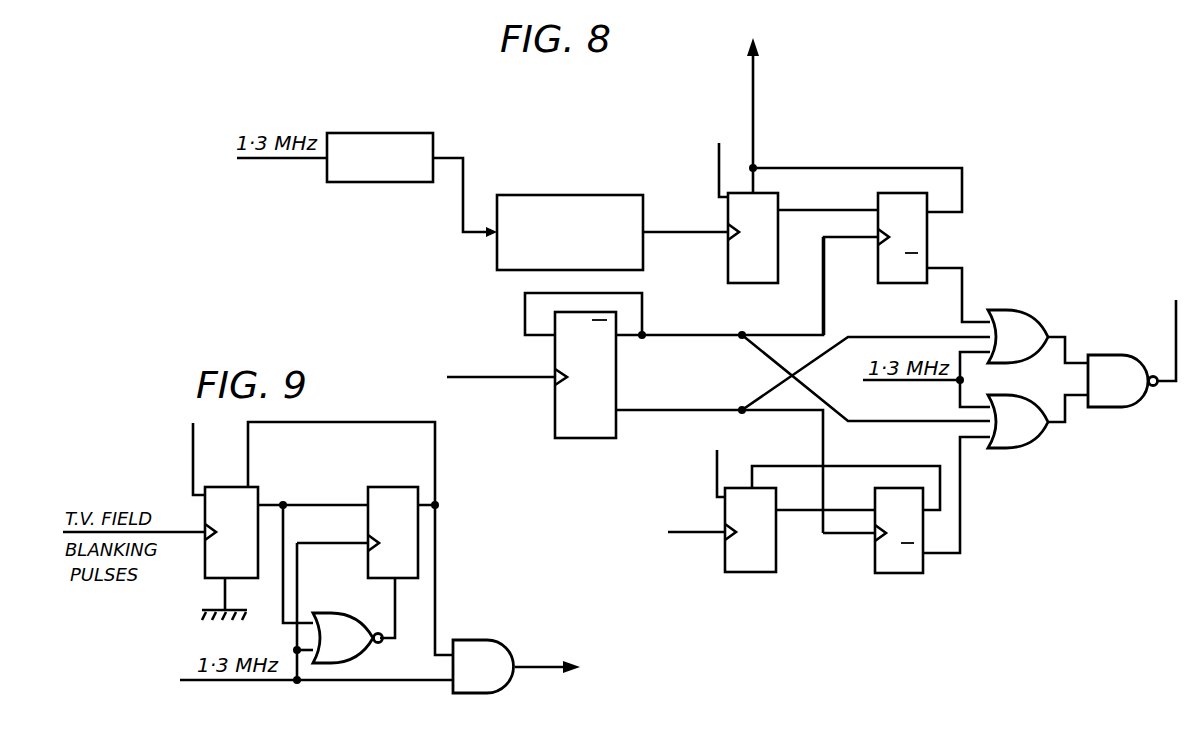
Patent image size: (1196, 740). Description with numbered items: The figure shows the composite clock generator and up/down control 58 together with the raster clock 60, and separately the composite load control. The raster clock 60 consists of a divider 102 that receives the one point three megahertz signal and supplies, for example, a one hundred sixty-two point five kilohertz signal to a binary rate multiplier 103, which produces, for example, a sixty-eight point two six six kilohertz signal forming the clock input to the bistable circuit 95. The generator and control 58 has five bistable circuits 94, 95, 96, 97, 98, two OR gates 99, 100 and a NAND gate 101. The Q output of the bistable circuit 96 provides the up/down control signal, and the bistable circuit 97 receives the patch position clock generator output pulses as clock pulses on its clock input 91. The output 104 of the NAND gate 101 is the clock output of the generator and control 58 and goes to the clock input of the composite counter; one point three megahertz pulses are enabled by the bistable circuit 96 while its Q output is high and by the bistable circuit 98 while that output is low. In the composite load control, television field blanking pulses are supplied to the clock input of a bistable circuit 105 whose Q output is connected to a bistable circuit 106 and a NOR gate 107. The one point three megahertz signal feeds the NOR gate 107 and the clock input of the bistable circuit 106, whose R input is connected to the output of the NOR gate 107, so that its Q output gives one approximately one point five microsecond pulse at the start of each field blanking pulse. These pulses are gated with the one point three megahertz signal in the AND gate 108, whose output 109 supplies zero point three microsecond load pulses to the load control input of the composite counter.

In FIG. 8, the composite clock generator and up/down control 58 is at (1045, 263).
In FIG. 8, the raster clock 60 is at (487, 173).
In FIG. 8, the clock input line 91 is at (692, 534).
In FIG. 8, the bistable circuit 94 is at (555, 421).
In FIG. 8, the bistable circuit 95 is at (728, 211).
In FIG. 8, the bistable circuit 96 is at (928, 238).
In FIG. 8, the bistable circuit 97 is at (725, 503).
In FIG. 8, the bistable circuit 98 is at (875, 559).
In FIG. 8, the OR gate 99 is at (1027, 314).
In FIG. 8, the OR gate 100 is at (1015, 444).
In FIG. 8, the NAND gate 101 is at (1135, 404).
In FIG. 8, the divider 102 is at (378, 133).
In FIG. 8, the binary rate multiplier 103 is at (585, 195).
In FIG. 8, the output 104 is at (1176, 322).
In FIG. 9, the bistable circuit 105 is at (233, 475).
In FIG. 9, the bistable circuit 106 is at (395, 487).
In FIG. 9, the NOR gate 107 is at (330, 613).
In FIG. 9, the AND gate 108 is at (498, 641).
In FIG. 9, the output 109 is at (530, 668).